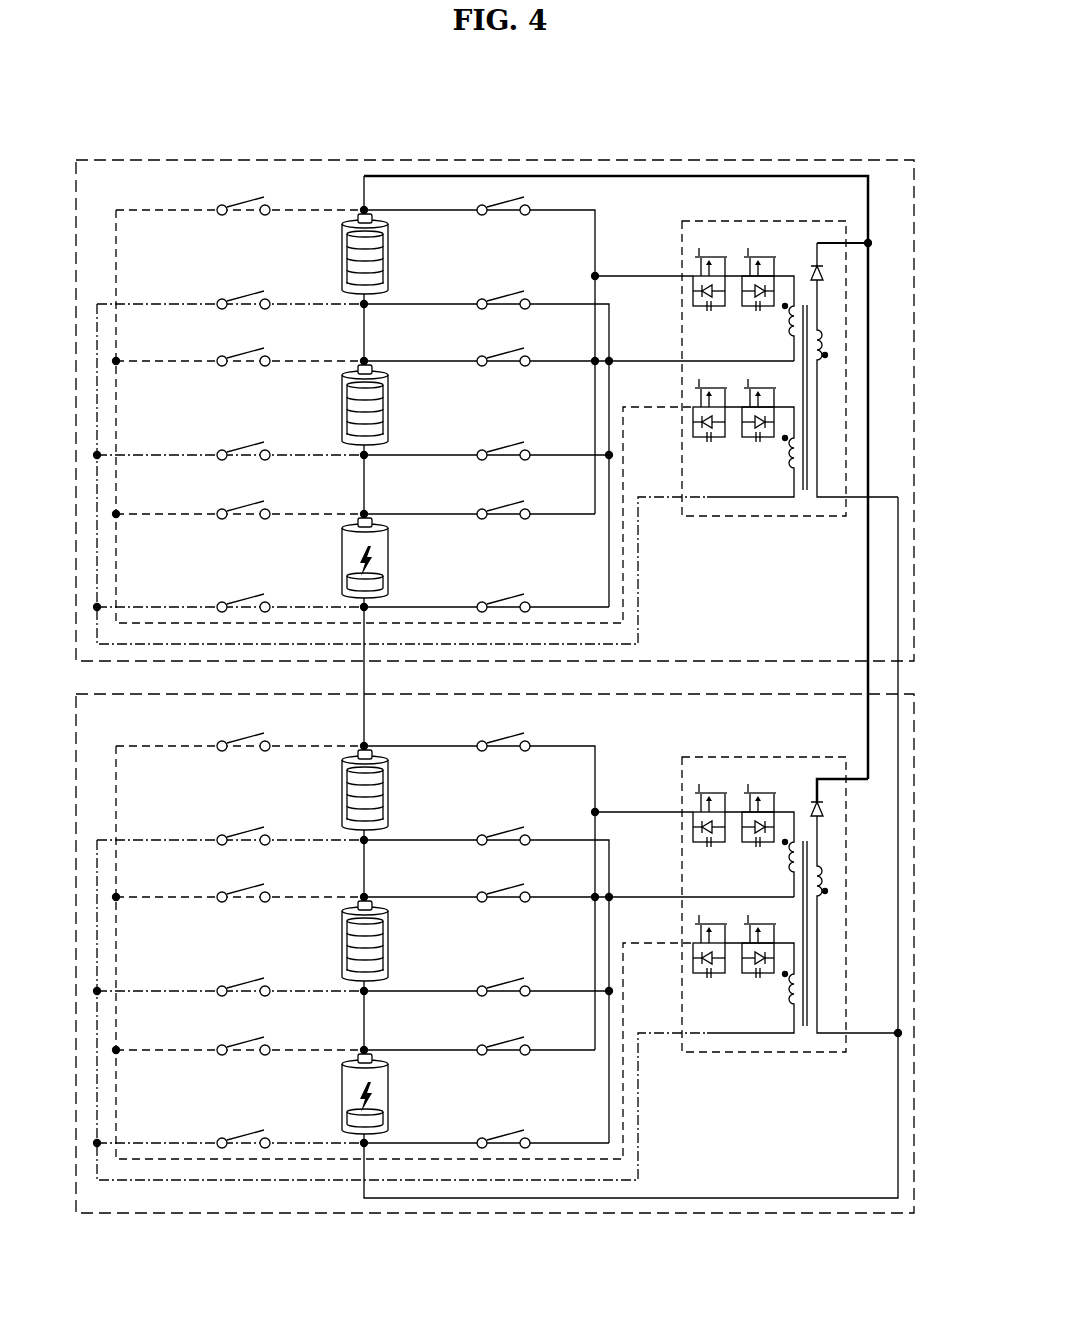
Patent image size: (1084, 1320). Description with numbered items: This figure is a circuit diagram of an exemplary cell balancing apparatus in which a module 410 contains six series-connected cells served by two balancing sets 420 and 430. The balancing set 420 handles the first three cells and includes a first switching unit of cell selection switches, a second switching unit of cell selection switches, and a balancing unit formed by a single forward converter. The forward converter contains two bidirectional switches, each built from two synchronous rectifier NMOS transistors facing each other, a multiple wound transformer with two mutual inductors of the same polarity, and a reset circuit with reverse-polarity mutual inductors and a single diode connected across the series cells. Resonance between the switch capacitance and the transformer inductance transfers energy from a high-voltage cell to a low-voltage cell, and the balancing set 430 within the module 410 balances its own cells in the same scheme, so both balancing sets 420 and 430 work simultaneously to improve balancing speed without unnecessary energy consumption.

The module 410 is at (814, 107).
The balancing set 420 is at (755, 159).
The balancing set 430 is at (755, 695).